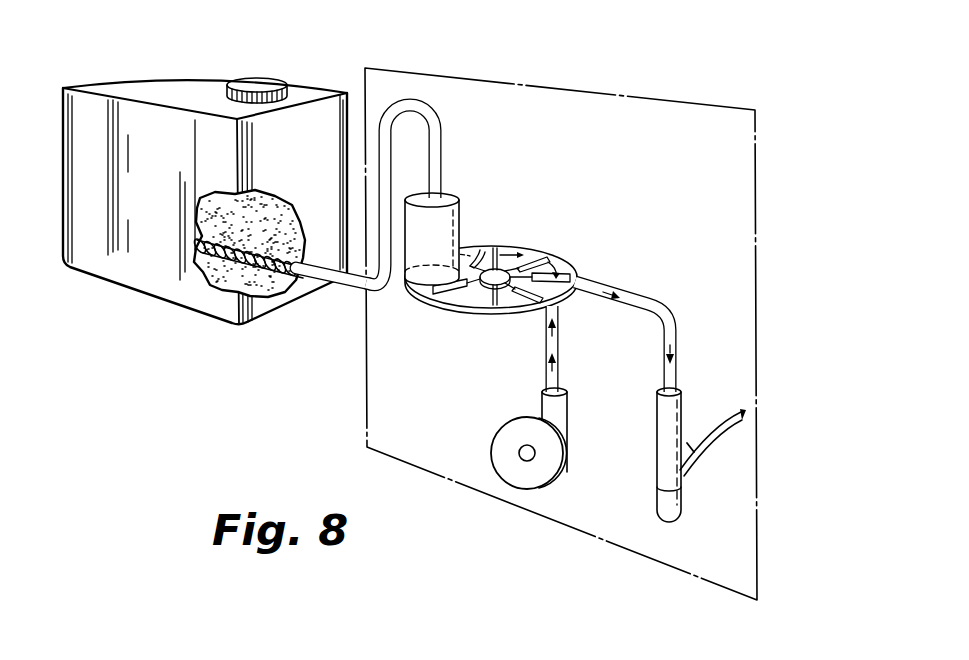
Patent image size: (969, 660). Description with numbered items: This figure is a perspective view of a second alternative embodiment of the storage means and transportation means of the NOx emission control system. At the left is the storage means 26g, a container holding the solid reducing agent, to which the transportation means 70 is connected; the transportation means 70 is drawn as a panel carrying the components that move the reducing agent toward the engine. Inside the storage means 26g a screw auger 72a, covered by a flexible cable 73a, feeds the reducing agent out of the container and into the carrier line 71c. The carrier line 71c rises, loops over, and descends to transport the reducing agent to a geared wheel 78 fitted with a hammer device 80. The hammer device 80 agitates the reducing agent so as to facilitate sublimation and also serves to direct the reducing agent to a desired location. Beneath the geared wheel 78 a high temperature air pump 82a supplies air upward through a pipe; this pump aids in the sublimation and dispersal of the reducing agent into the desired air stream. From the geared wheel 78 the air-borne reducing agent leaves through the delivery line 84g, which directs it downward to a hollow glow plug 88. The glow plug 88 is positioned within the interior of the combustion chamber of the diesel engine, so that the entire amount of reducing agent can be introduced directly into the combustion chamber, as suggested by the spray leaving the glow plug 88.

The transportation means 70 is at (662, 88).
The liquid reservoir 26g is at (88, 245).
The wick 72a is at (240, 327).
The supply tube 73a is at (328, 293).
The carrier line 71c is at (442, 137).
The hammer device 80 is at (460, 222).
The geared wheel 78 is at (463, 312).
The pump 82a is at (505, 433).
The delivery line 84g is at (619, 282).
The hollow glow plug 88 is at (670, 412).